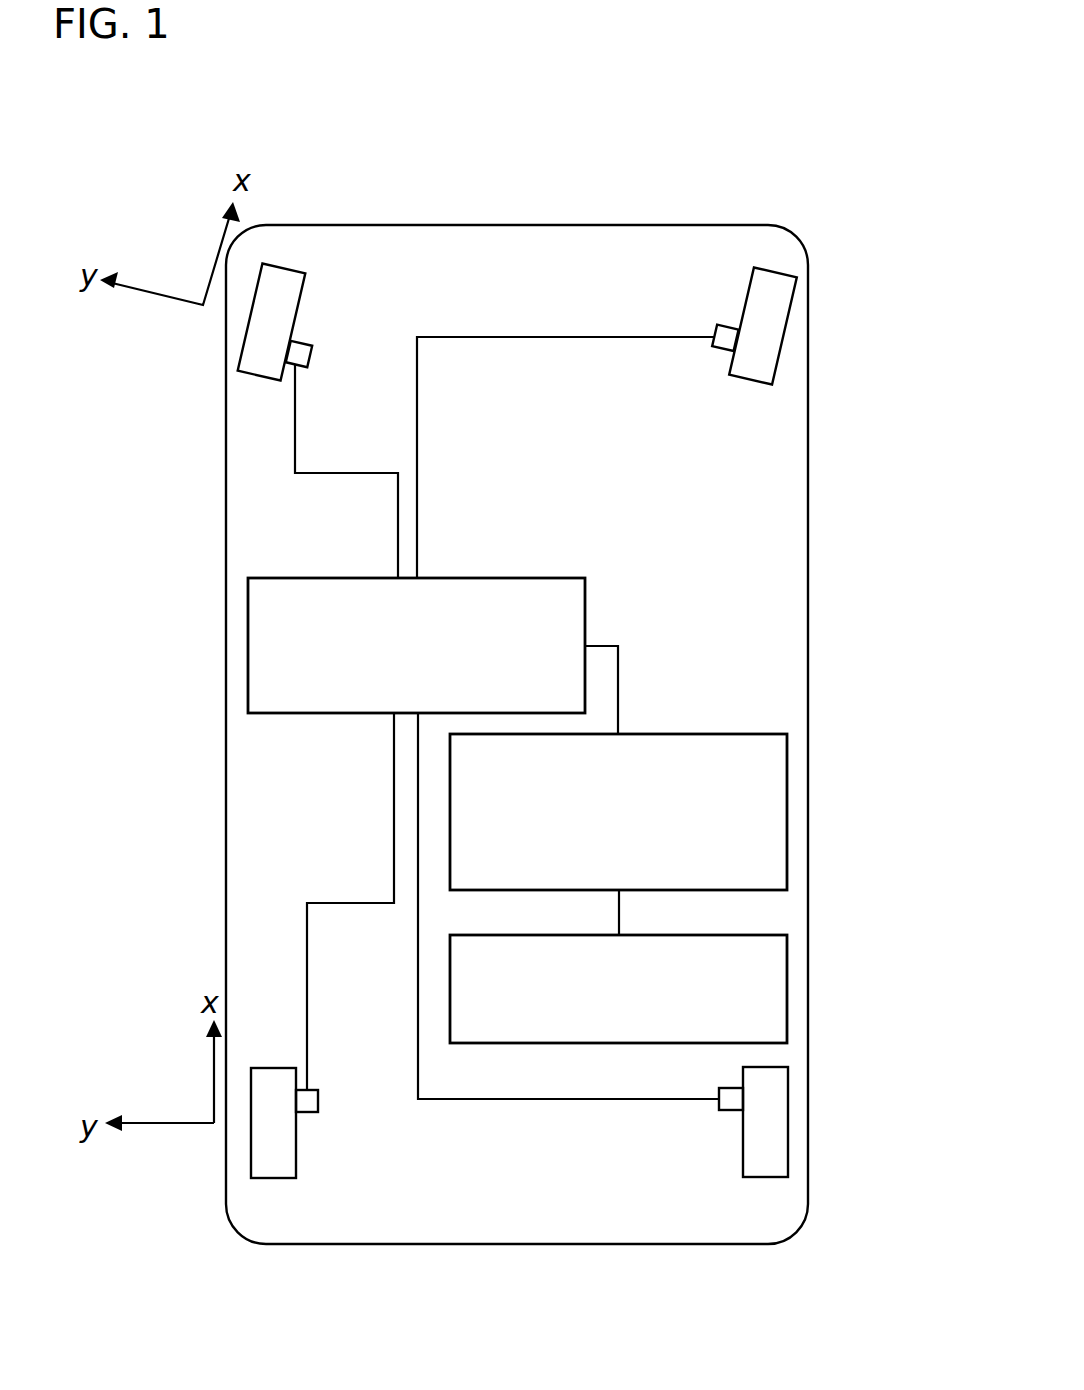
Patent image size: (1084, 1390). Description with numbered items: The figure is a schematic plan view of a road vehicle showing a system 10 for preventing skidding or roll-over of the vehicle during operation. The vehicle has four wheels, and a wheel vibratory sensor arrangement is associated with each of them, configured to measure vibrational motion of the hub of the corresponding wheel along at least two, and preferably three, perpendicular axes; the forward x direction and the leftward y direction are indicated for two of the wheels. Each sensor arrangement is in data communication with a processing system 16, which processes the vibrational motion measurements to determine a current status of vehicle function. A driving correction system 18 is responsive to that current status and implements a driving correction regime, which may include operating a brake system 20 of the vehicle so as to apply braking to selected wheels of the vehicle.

The system 10 is at (605, 124).
The processing system 16 is at (248, 648).
The driving correction system 18 is at (787, 810).
The brake system 20 is at (787, 988).